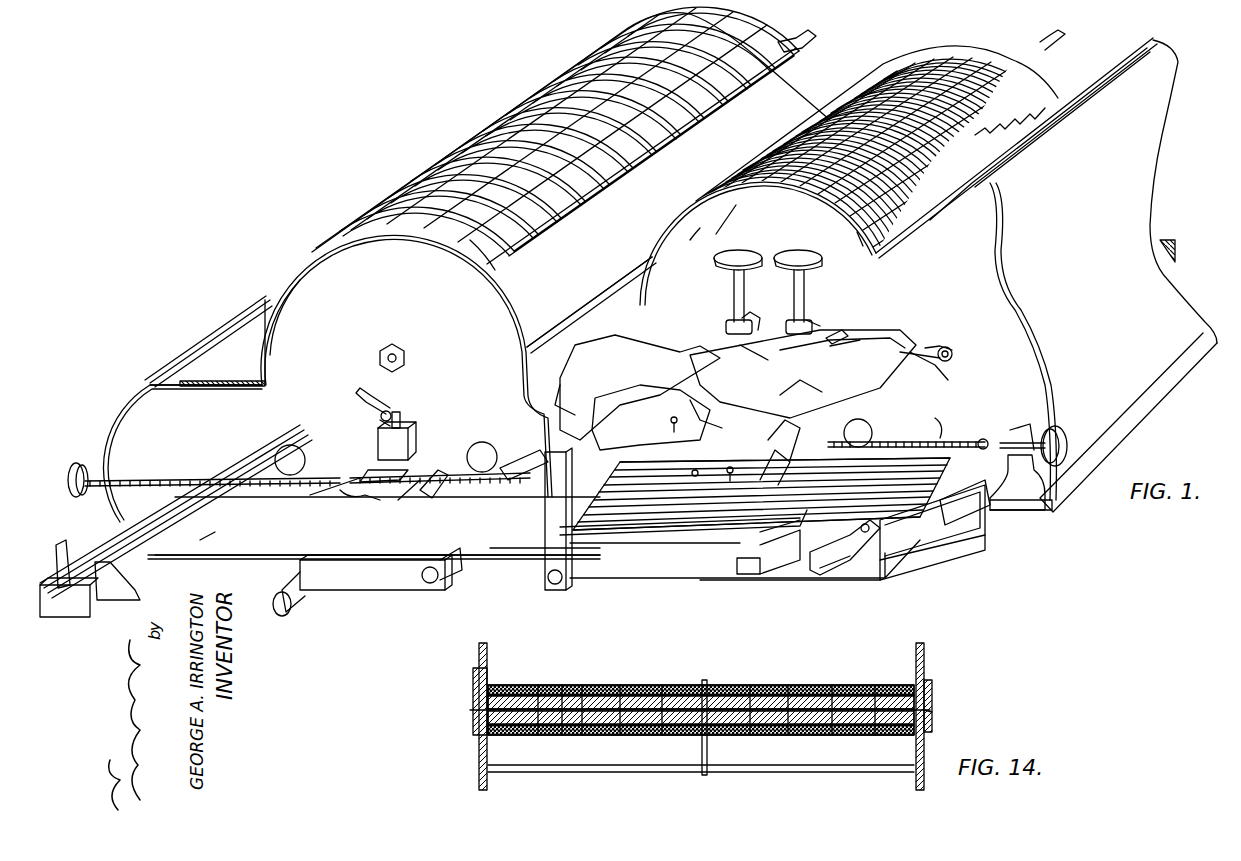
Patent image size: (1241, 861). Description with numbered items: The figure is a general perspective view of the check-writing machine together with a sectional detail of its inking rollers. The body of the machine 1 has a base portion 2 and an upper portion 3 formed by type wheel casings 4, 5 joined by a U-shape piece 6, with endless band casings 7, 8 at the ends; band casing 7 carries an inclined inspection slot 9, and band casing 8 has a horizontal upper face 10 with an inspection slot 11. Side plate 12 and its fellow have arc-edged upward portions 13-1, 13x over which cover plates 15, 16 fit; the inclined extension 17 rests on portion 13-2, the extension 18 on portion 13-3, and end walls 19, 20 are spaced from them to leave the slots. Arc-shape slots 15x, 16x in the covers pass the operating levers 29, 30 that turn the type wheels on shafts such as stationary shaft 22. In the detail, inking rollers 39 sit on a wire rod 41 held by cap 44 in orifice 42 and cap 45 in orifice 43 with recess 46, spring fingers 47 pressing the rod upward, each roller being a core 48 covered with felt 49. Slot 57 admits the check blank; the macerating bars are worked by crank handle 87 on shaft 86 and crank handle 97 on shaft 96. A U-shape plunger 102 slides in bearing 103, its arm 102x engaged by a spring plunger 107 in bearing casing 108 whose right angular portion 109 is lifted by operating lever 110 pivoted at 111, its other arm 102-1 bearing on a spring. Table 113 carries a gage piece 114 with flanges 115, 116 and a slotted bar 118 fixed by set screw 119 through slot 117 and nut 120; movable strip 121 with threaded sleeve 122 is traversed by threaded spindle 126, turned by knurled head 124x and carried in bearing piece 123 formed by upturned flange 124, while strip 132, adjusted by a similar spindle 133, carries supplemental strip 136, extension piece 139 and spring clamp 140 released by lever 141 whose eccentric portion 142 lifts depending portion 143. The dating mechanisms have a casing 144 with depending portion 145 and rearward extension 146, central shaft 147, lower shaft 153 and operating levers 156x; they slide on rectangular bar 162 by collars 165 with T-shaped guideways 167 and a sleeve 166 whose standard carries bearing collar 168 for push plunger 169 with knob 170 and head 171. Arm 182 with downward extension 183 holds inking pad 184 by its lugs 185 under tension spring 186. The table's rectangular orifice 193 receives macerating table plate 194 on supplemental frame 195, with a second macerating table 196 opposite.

In FIG. 1, the body of the machine 1 is at (1090, 436).
In FIG. 1, the base portion 2 is at (1014, 482).
In FIG. 1, the upper portion 3 is at (377, 484).
In FIG. 1, the type wheel casing 4 is at (758, 243).
In FIG. 1, the type wheel casing 5 is at (406, 366).
In FIG. 1, the U-shape piece 6 is at (576, 345).
In FIG. 1, the endless band casing 7 is at (1023, 341).
In FIG. 1, the endless band casing 8 is at (128, 398).
In FIG. 1, the longitudinal inspection slot 9 is at (1058, 138).
In FIG. 1, the horizontal upper face 10 is at (238, 356).
In FIG. 1, the longitudinal inspection slot 11 is at (180, 368).
In FIG. 1, the side plate 12 is at (488, 447).
In FIG. 1, the upwardly extending portion of side plates 13x is at (571, 180).
In FIG. 1, the upwardly extending portion of side plates 13-1 is at (701, 229).
In FIG. 1, the portion of the side plates 13-2 is at (884, 155).
In FIG. 1, the portion of the side plates 13-3 is at (206, 404).
In FIG. 1, the cover plate 15 is at (727, 226).
In FIG. 1, the arc-shape slots 15x is at (857, 245).
In FIG. 1, the cover plate 16 is at (292, 281).
In FIG. 1, the arc-shape slots 16x is at (488, 262).
In FIG. 1, the inclined extension 17 is at (1010, 157).
In FIG. 1, the extension 18 is at (256, 392).
In FIG. 1, the end wall 19 is at (1150, 191).
In FIG. 1, the end wall 20 is at (108, 436).
In FIG. 1, the stationary shaft 22 is at (380, 362).
In FIG. 1, the operating lever 29 is at (986, 120).
In FIG. 1, the operating lever 30 is at (808, 44).
In FIG. 1, the cap 44 is at (872, 440).
In FIG. 14, the cap 44 is at (472, 710).
In FIG. 1, the slot 57 is at (309, 459).
In FIG. 1, the shaft 86 is at (561, 576).
In FIG. 1, the crank handle 87 is at (545, 438).
In FIG. 1, the shaft 96 is at (445, 568).
In FIG. 1, the crank handle 97 is at (370, 586).
In FIG. 1, the U-shape plunger 102 is at (425, 486).
In FIG. 1, the arm of the plunger 102x is at (361, 510).
In FIG. 1, the arm of the plunger 102-1 is at (441, 482).
In FIG. 1, the bearing 103 is at (349, 494).
In FIG. 1, the spring plunger 107 is at (404, 424).
In FIG. 1, the bearing casing 108 is at (414, 446).
In FIG. 1, the right angular portion 109 is at (391, 416).
In FIG. 1, the operating lever 110 is at (377, 419).
In FIG. 1, the pivot 111 is at (367, 428).
In FIG. 1, the table 113 is at (618, 530).
In FIG. 1, the gage piece 114 is at (764, 562).
In FIG. 1, the horizontal flange 115 is at (878, 556).
In FIG. 1, the horizontal flange 116 is at (734, 550).
In FIG. 1, the slot 117 is at (898, 540).
In FIG. 1, the slotted bar 118 is at (840, 572).
In FIG. 1, the set screw 119 is at (830, 547).
In FIG. 1, the nut 120 is at (938, 503).
In FIG. 1, the movable strip 121 is at (982, 438).
In FIG. 1, the internally threaded sleeve 122 is at (1004, 417).
In FIG. 1, the bearing piece 123 is at (1020, 431).
In FIG. 1, the upturned flange 124 is at (990, 462).
In FIG. 1, the head 124x is at (1062, 463).
In FIG. 1, the threaded spindle 126 is at (938, 426).
In FIG. 1, the strip 132 is at (110, 539).
In FIG. 1, the threaded spindle 133 is at (274, 471).
In FIG. 1, the supplemental strip 136 is at (214, 545).
In FIG. 1, the extension piece 139 is at (126, 588).
In FIG. 1, the spring clamp 140 is at (98, 606).
In FIG. 1, the lever 141 is at (58, 546).
In FIG. 1, the mechanism 142 is at (700, 424).
In FIG. 1, the mechanism 143 is at (651, 417).
In FIG. 1, the casing 144 is at (738, 385).
In FIG. 1, the depending portion 145 is at (648, 466).
In FIG. 1, the rearward extension 146 is at (948, 376).
In FIG. 1, the shaft 147 is at (688, 434).
In FIG. 1, the shaft 153 is at (700, 478).
In FIG. 1, the operating lever 156x is at (764, 320).
In FIG. 1, the rectangular bar 162 is at (945, 352).
In FIG. 1, the collar 165 is at (842, 356).
In FIG. 1, the sleeve 166 is at (838, 342).
In FIG. 1, the T-shaped guideway 167 is at (842, 326).
In FIG. 1, the bearing collar 168 is at (812, 320).
In FIG. 1, the push plunger 169 is at (808, 276).
In FIG. 1, the operating knob 170 is at (800, 256).
In FIG. 1, the head 171 is at (822, 355).
In FIG. 1, the arm 182 is at (793, 440).
In FIG. 1, the downward extension 183 is at (792, 463).
In FIG. 1, the inking pad 184 is at (718, 520).
In FIG. 1, the lugs 185 is at (743, 548).
In FIG. 1, the tension spring 186 is at (801, 396).
In FIG. 1, the rectangular orifice 193 is at (558, 550).
In FIG. 1, the macerating table plate 194 is at (718, 494).
In FIG. 1, the supplemental frame 195 is at (874, 578).
In FIG. 1, the macerating table 196 is at (1170, 246).
In FIG. 14, the inking roller 39 is at (599, 686).
In FIG. 14, the wire rod 41 is at (545, 710).
In FIG. 14, the orifice 42 is at (478, 686).
In FIG. 14, the orifice 43 is at (924, 672).
In FIG. 14, the cap 45 is at (933, 700).
In FIG. 14, the recess 46 is at (933, 716).
In FIG. 14, the spring fingers 47 is at (918, 746).
In FIG. 14, the internal core 48 is at (639, 692).
In FIG. 14, the felt 49 is at (631, 684).